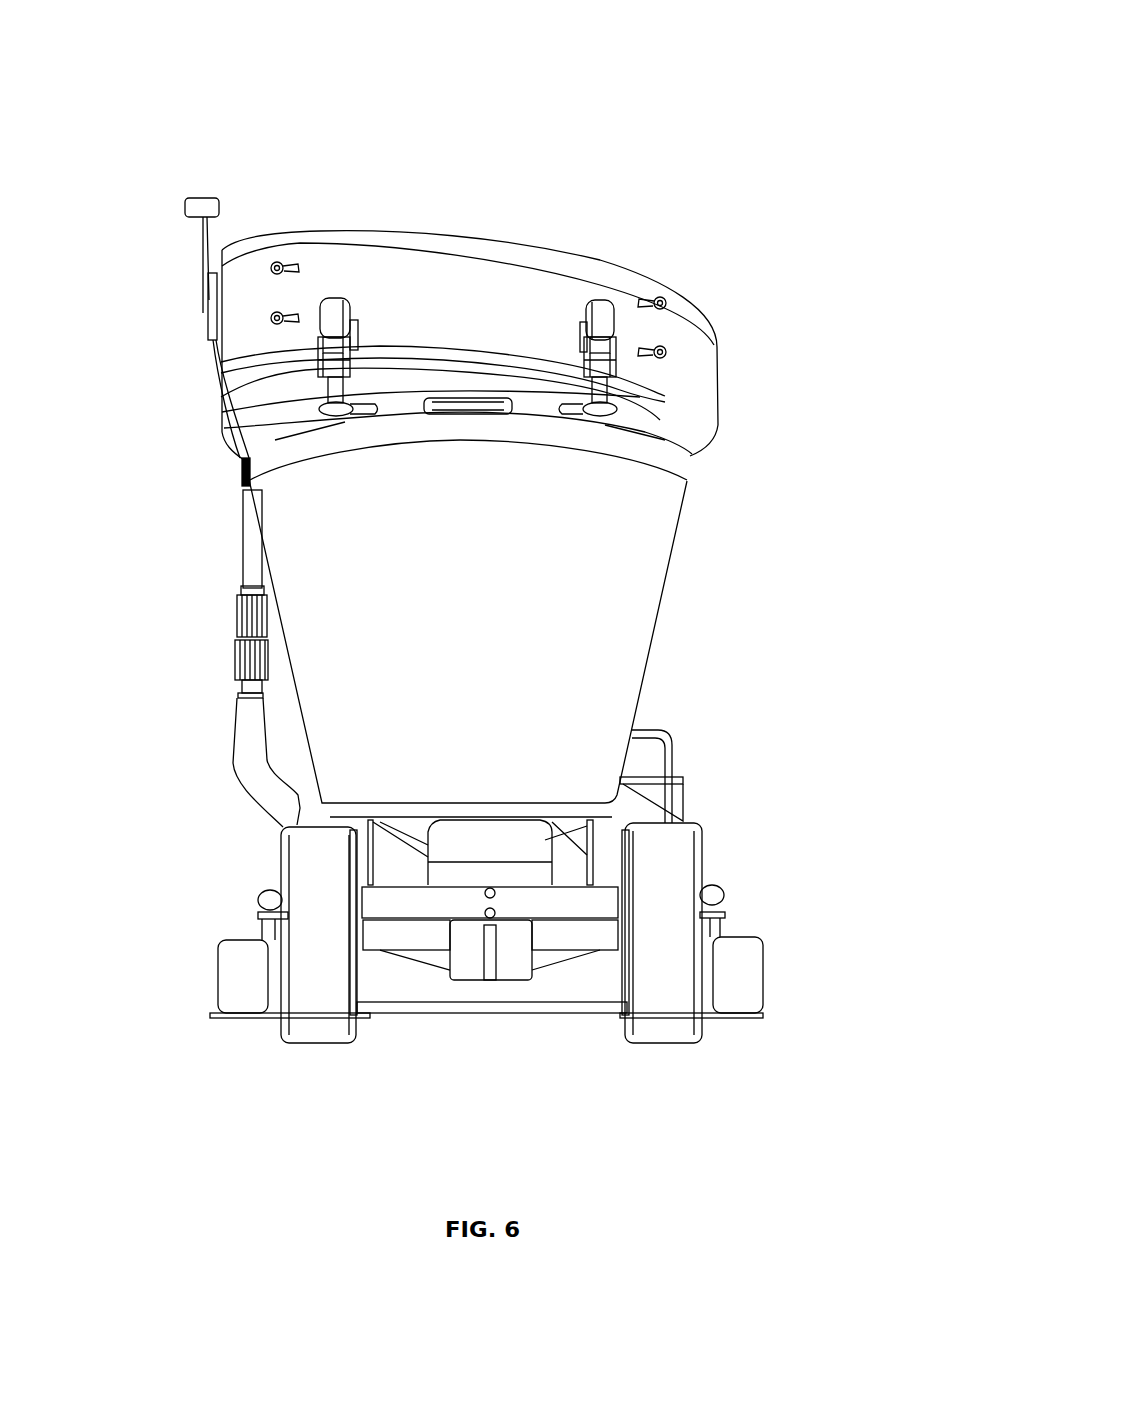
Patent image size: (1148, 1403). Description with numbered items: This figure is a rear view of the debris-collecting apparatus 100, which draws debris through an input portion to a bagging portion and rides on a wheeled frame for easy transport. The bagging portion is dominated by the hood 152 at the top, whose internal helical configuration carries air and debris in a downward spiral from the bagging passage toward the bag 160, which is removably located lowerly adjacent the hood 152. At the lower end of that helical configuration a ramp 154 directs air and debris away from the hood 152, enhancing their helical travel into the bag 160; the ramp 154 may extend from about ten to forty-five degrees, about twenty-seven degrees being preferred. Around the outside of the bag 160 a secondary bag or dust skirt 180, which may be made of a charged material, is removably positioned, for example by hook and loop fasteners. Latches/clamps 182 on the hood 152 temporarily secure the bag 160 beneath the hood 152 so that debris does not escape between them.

The debris-collecting apparatus 100 is at (705, 60).
The hood 152 is at (474, 208).
The ramp 154 is at (660, 422).
The bag 160 is at (664, 534).
The dust skirt 180 is at (495, 611).
The latches/clamps 182 is at (335, 315).